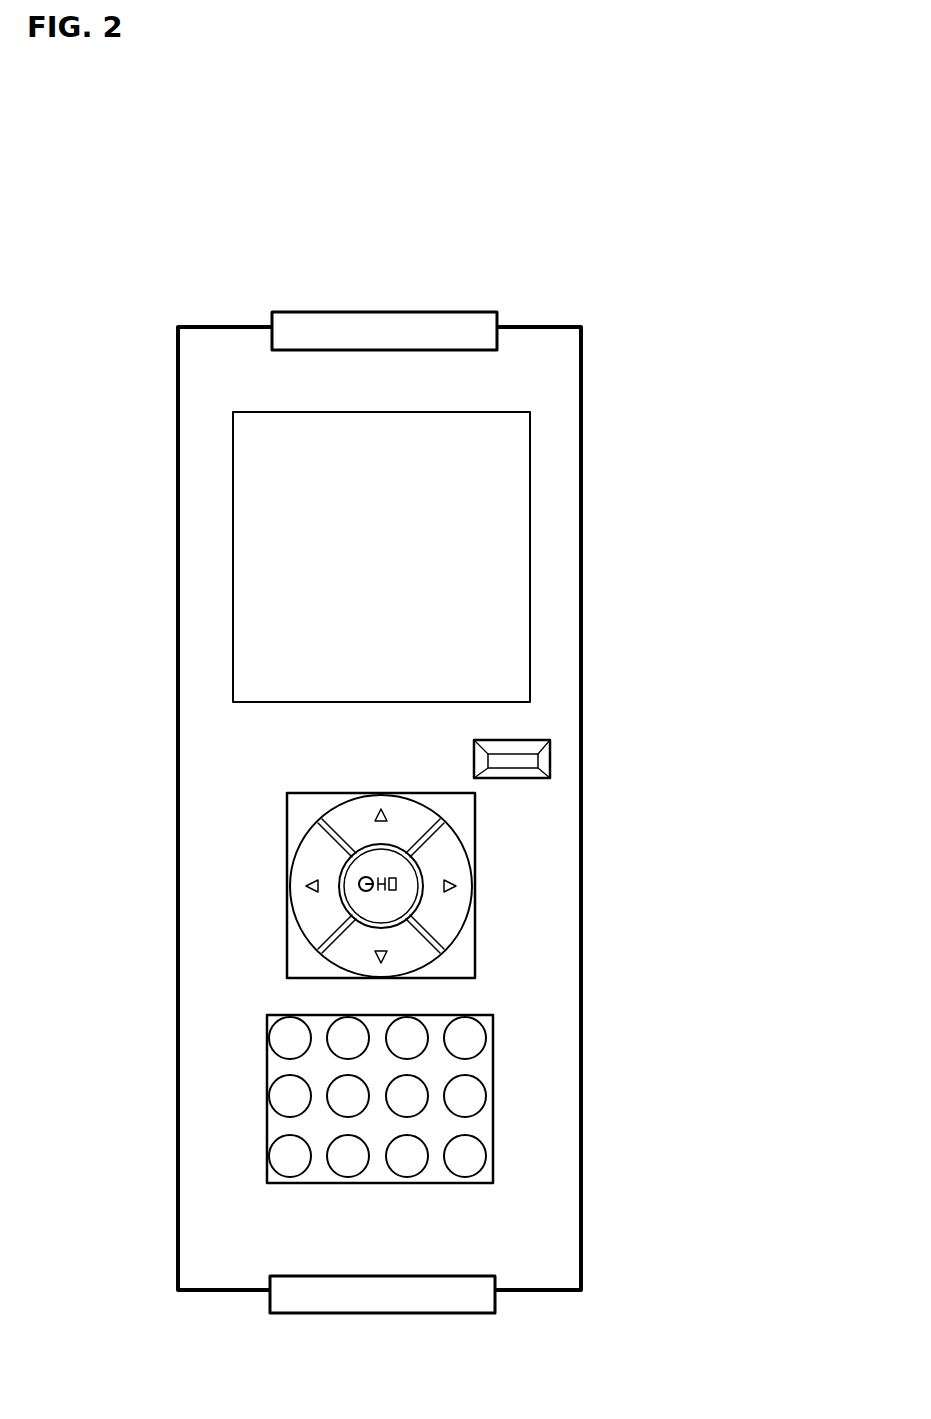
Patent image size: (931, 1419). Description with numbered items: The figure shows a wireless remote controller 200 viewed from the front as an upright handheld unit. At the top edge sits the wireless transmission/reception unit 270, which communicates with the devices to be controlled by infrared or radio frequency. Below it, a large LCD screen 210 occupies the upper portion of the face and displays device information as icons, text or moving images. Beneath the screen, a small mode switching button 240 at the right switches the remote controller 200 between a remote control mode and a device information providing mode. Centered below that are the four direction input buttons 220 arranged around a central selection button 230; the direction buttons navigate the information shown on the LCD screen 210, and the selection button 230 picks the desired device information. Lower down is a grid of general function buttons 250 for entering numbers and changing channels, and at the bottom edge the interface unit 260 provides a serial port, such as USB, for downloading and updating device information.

The wireless remote controller 200 is at (177, 387).
The LCD screen 210 is at (233, 555).
The four direction input buttons 220 is at (310, 913).
The selection button 230 is at (393, 906).
The mode switching button 240 is at (550, 760).
The general function buttons 250 is at (267, 1118).
The interface unit 260 is at (323, 1313).
The wireless transmission/reception unit 270 is at (495, 312).